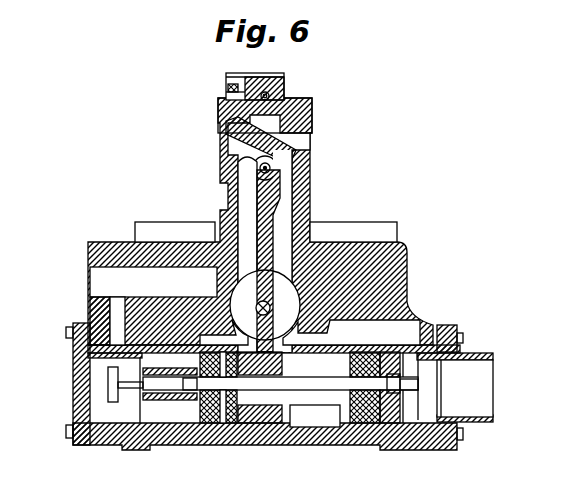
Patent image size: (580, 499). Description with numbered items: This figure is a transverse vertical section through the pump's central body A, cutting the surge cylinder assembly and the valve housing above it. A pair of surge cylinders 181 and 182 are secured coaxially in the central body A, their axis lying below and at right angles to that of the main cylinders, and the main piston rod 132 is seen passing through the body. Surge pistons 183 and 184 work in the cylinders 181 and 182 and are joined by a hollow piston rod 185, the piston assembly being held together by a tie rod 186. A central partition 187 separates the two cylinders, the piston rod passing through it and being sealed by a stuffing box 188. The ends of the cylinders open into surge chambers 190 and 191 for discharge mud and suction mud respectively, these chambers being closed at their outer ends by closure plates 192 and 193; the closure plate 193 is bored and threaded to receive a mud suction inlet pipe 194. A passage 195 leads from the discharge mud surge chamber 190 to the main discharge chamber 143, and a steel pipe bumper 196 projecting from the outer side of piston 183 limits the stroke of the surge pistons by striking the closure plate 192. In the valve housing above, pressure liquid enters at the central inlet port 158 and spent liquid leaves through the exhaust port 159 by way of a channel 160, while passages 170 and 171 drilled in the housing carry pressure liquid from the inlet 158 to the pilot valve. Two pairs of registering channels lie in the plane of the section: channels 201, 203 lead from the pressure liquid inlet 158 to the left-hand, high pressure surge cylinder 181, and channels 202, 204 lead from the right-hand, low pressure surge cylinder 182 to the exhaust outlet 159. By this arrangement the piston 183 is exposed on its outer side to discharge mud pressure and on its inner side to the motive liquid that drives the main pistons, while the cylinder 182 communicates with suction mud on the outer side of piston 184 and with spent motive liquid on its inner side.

The piston rod 132 is at (277, 300).
The discharge chamber 143 is at (130, 280).
The central inlet port 158 is at (232, 141).
The exhaust port 159 is at (302, 140).
The channel 160 is at (283, 105).
The passage 170 is at (238, 114).
The passage 171 is at (250, 78).
The surge cylinder 181 is at (174, 413).
The surge cylinder 182 is at (353, 415).
The surge piston 183 is at (217, 427).
The surge piston 184 is at (372, 428).
The hollow piston rod 185 is at (307, 410).
The tie rod 186 is at (326, 346).
The central partition 187 is at (240, 303).
The stuffing box 188 is at (265, 423).
The surge chamber 190 is at (124, 405).
The surge chamber 191 is at (452, 306).
The closure plate 192 is at (80, 375).
The closure plate 193 is at (462, 337).
The mud suction inlet pipe 194 is at (490, 388).
The passage 195 is at (117, 308).
The steel pipe bumper 196 is at (162, 378).
The channel 201 is at (175, 232).
The channel 202 is at (280, 233).
The channel 203 is at (245, 192).
The channel 204 is at (292, 200).
The central body A is at (81, 244).